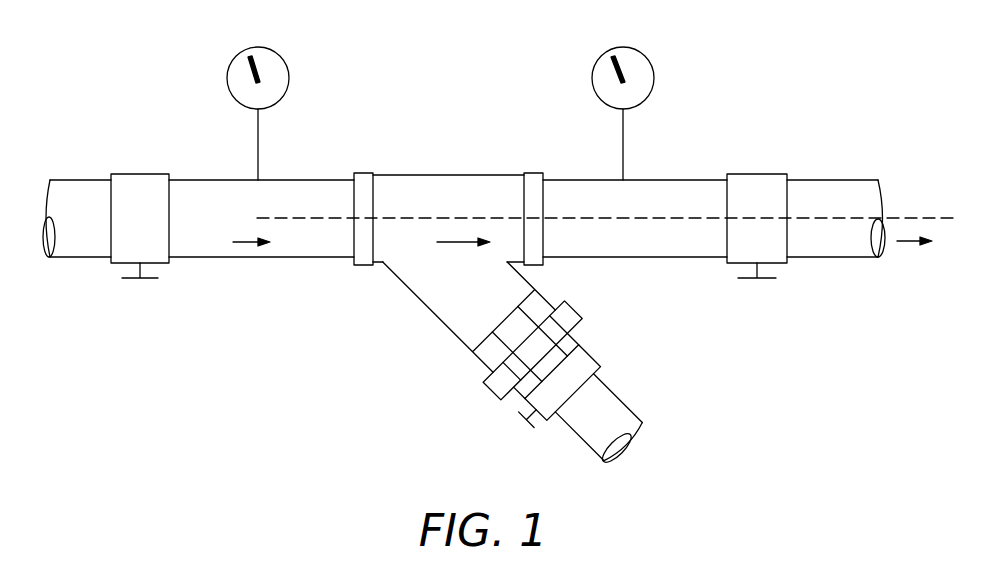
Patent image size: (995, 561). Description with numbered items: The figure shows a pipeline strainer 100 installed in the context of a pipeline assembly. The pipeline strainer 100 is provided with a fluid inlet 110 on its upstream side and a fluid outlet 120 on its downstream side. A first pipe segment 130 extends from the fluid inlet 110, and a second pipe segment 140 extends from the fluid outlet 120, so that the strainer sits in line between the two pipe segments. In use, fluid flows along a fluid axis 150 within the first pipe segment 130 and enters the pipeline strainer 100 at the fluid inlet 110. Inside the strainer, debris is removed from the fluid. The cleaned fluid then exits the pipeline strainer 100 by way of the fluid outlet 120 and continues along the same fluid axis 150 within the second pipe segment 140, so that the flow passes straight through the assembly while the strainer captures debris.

The pipeline strainer 100 is at (487, 107).
The fluid inlet 110 is at (387, 193).
The fluid outlet 120 is at (515, 172).
The first pipe segment 130 is at (193, 180).
The second pipe segment 140 is at (795, 178).
The fluid axis 150 is at (916, 218).